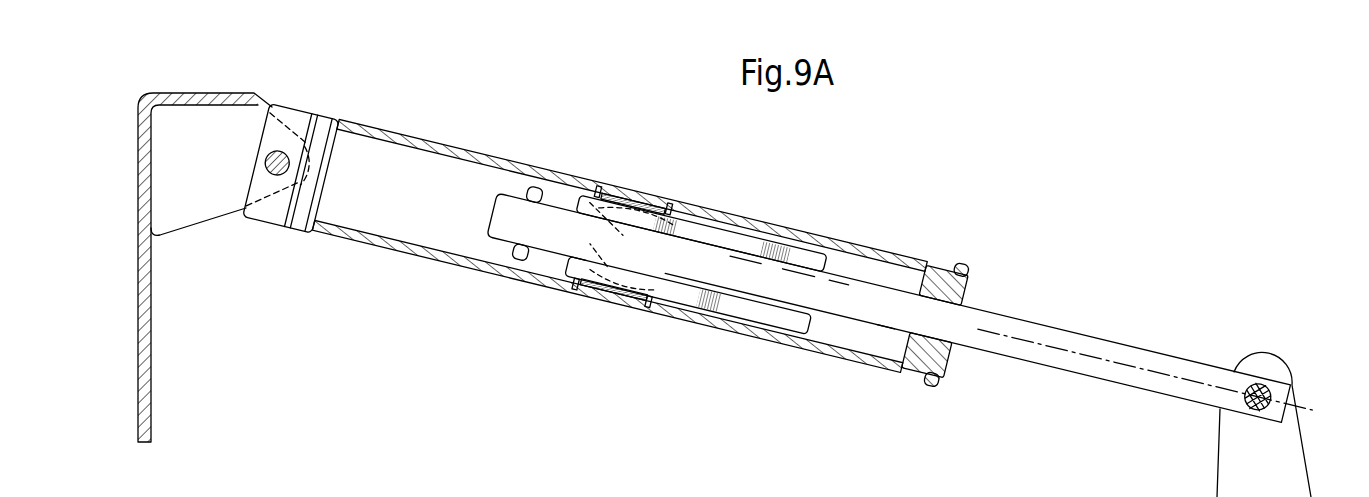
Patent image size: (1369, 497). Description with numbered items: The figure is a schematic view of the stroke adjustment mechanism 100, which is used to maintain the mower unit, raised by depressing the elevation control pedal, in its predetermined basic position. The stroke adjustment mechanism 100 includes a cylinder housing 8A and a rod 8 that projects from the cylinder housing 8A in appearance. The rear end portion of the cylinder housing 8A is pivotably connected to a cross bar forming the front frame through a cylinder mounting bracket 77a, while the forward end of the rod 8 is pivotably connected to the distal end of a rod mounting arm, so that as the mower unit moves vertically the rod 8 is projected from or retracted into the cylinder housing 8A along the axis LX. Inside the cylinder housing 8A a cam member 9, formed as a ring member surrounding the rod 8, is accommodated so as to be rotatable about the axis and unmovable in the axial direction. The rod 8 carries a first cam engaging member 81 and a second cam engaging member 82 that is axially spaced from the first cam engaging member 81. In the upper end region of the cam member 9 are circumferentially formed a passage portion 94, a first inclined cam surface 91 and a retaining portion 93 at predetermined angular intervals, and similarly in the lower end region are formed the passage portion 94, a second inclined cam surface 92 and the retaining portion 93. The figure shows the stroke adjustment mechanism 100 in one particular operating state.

The cylinder mounting bracket 77a is at (138, 183).
The rod 8 is at (1123, 350).
The cylinder housing 8A is at (888, 250).
The cam member 9 is at (627, 197).
The first inclined cam surface 91 is at (597, 187).
The second inclined cam surface 92 is at (622, 296).
The retaining portion 93 is at (661, 293).
The passage portion 94 is at (611, 281).
The first cam engaging member 81 is at (517, 259).
The second cam engaging member 82 is at (745, 314).
The stroke adjustment mechanism 100 is at (1012, 224).
The axis line LX is at (1016, 341).